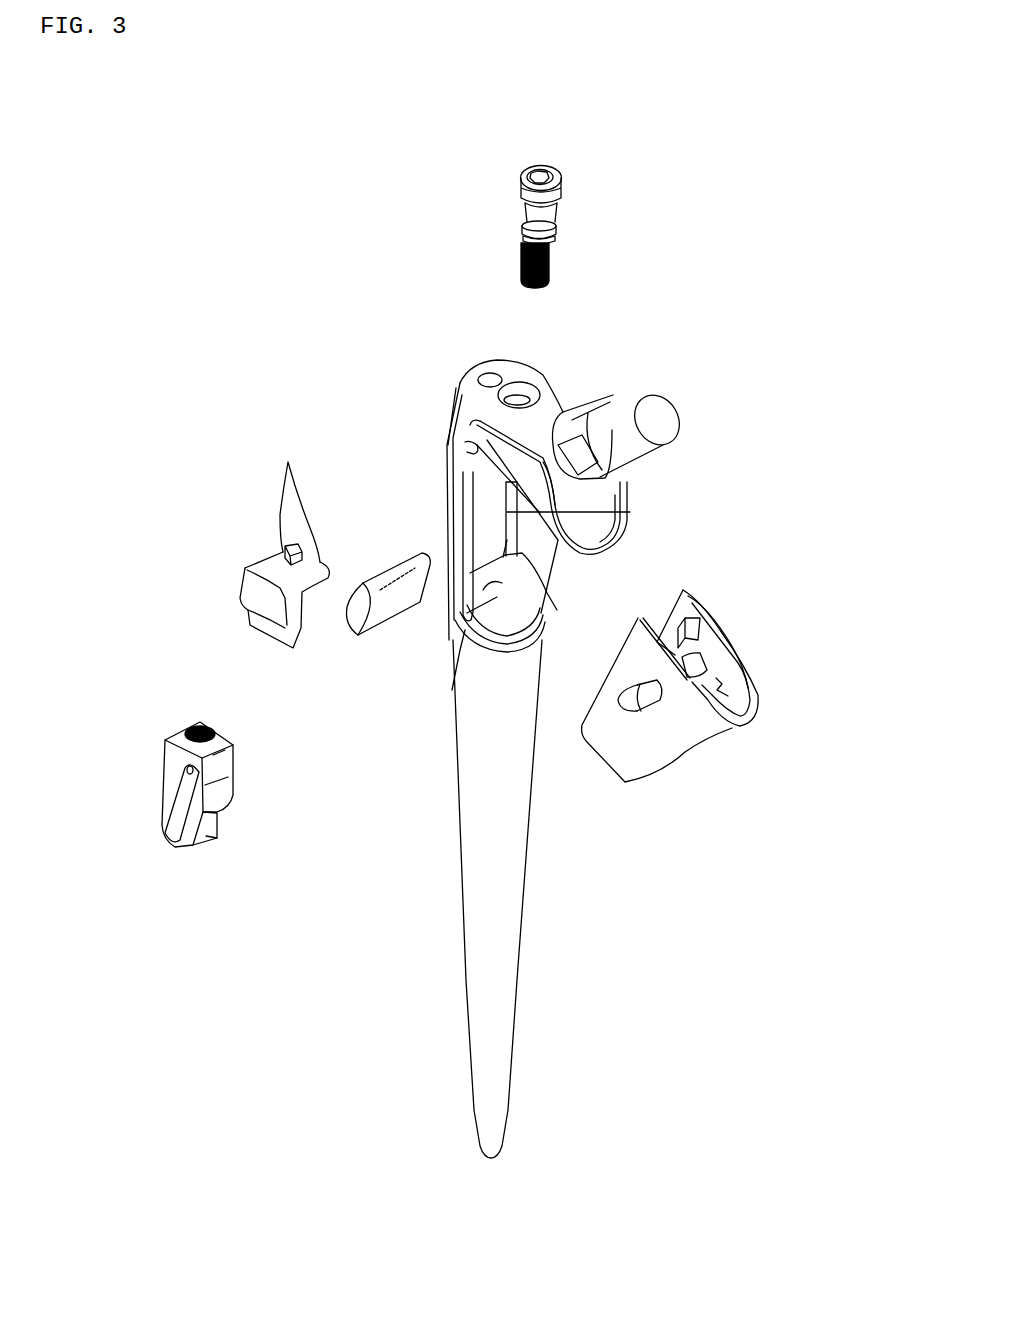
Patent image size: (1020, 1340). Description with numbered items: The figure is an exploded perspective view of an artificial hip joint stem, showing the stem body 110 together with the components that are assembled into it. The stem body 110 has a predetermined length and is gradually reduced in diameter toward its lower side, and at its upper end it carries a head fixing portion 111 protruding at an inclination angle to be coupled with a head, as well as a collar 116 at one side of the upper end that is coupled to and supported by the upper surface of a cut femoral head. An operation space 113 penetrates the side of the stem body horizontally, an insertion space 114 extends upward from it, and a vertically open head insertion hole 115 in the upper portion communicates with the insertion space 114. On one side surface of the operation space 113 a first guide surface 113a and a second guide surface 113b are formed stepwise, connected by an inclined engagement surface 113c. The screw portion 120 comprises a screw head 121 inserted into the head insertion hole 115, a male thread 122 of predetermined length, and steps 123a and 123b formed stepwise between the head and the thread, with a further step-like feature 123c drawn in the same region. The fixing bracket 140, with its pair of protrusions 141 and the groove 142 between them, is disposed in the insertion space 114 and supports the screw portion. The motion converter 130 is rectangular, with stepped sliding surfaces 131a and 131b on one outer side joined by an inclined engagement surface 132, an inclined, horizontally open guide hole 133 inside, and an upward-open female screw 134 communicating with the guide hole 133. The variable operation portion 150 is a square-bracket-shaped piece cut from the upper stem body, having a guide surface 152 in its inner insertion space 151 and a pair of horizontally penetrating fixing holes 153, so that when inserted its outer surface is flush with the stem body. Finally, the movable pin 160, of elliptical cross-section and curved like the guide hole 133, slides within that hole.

The stem body 110 is at (518, 940).
The head fixing portion 111 is at (657, 413).
The operation space 113 is at (488, 538).
The first guide surface 113a is at (630, 512).
The second guide surface 113b is at (452, 690).
The engagement surface 113c is at (508, 515).
The insertion space 114 is at (448, 437).
The head insertion hole 115 is at (508, 384).
The collar 116 is at (603, 557).
The screw portion 120 is at (527, 170).
The screw head 121 is at (562, 176).
The male thread 122 is at (551, 280).
The step 123a is at (556, 238).
The step 123b is at (548, 217).
The collar 123c is at (547, 223).
The motion converter 130 is at (162, 775).
The sliding surface 131a is at (223, 778).
The sliding surface 131b is at (206, 836).
The engagement surface 132 is at (217, 812).
The guide hole 133 is at (172, 842).
The female screw 134 is at (198, 726).
The fixing bracket 140 is at (244, 585).
The protrusion 141 is at (296, 494).
The groove 142 is at (278, 550).
The variable operation portion 150 is at (753, 728).
The inner insertion space 151 is at (722, 680).
The guide surface 152 is at (703, 648).
The fixing hole 153 is at (648, 698).
The movable pin 160 is at (350, 633).